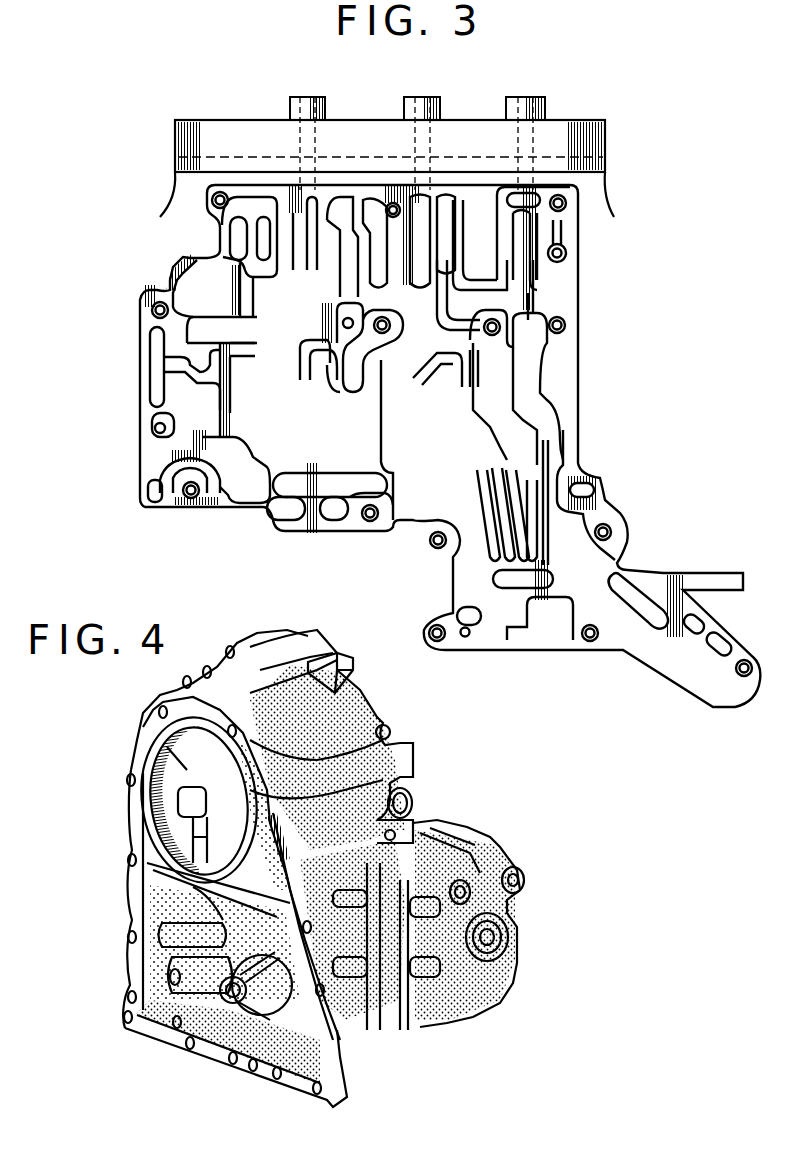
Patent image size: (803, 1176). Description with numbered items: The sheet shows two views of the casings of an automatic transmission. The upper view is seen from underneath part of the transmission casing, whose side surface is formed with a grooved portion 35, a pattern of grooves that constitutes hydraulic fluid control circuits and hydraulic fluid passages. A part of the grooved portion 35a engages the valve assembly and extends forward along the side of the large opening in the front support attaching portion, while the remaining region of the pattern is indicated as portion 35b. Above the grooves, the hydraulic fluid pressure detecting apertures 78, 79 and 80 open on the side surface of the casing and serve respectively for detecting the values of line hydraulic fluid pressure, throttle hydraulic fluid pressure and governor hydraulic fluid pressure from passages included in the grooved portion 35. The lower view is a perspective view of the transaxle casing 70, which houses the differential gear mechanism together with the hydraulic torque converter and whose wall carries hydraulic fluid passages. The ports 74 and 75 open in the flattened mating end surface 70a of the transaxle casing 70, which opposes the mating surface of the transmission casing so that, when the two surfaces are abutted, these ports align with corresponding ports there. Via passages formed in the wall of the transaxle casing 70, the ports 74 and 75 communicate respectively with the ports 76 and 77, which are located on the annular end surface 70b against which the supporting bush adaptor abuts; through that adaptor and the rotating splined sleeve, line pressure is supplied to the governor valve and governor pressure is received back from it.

In FIG. 3, the grooved portion 35 is at (308, 445).
In FIG. 3, the part of the grooved portion 35a is at (593, 651).
In FIG. 3, the upper portion of separator plate 35b is at (579, 293).
In FIG. 3, the hydraulic fluid pressure detecting aperture 78 is at (326, 101).
In FIG. 3, the hydraulic fluid pressure detecting aperture 79 is at (441, 101).
In FIG. 3, the hydraulic fluid pressure detecting aperture 80 is at (546, 101).
In FIG. 4, the transaxle casing 70 is at (136, 898).
In FIG. 4, the flattened mating end surface 70a is at (310, 1100).
In FIG. 4, the annular end surface 70b is at (352, 1050).
In FIG. 4, the port 74 is at (177, 1025).
In FIG. 4, the port 75 is at (260, 1073).
In FIG. 4, the port 76 is at (247, 1013).
In FIG. 4, the port 77 is at (260, 1047).